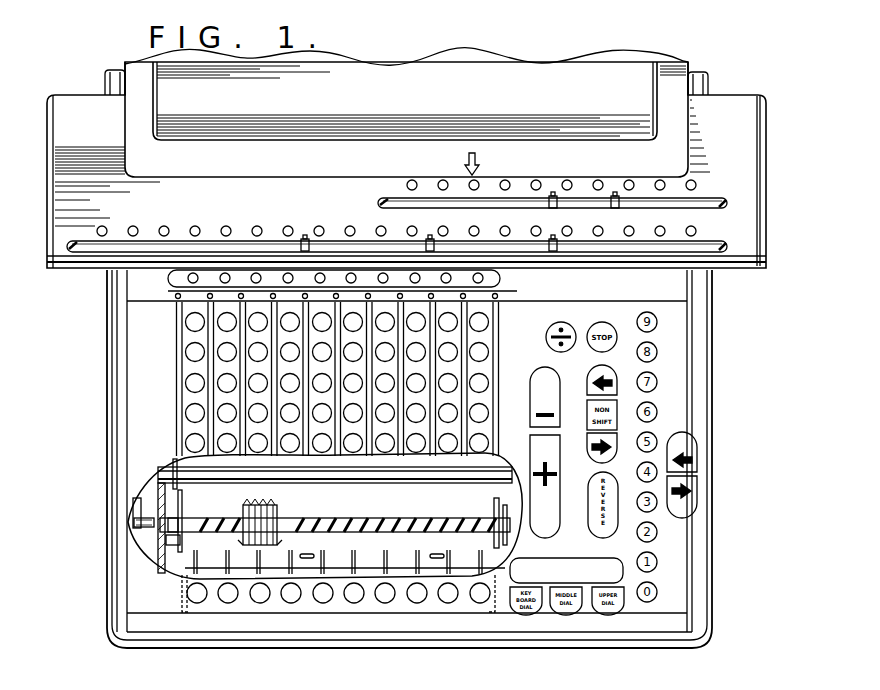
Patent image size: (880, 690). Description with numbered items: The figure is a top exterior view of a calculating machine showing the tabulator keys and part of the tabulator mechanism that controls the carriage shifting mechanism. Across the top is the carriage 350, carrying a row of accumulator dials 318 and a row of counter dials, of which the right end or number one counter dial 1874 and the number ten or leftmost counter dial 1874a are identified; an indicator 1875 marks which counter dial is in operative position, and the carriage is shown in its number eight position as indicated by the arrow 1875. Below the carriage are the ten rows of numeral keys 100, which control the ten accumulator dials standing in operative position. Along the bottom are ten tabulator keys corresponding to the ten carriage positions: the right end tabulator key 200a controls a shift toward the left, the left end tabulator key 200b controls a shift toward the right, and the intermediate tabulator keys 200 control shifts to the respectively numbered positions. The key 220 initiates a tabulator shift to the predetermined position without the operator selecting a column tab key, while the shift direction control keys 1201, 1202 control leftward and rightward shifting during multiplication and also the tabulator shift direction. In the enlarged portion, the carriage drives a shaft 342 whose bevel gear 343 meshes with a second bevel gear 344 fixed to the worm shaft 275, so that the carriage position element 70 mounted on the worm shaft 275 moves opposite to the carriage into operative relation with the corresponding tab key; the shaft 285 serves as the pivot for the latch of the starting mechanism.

The carriage 350 is at (75, 100).
The accumulator dials 318 is at (102, 226).
The leftmost counter dial 1874a is at (412, 180).
The indicator 1875 is at (478, 168).
The counter dial 1874 is at (695, 186).
The numeral keys 100 is at (192, 351).
The shift direction control key 1201 is at (612, 378).
The shift direction control key 1202 is at (612, 442).
The shaft 342 is at (140, 510).
The bevel gear 343 is at (148, 523).
The second bevel gear 344 is at (145, 537).
The carriage position element 70 is at (236, 514).
The shaft 285 is at (366, 474).
The worm shaft 275 is at (440, 508).
The key 220 is at (570, 568).
The left end tabulator key 200b is at (197, 603).
The tabulator keys 200 is at (228, 603).
The right end tabulator key 200a is at (480, 603).